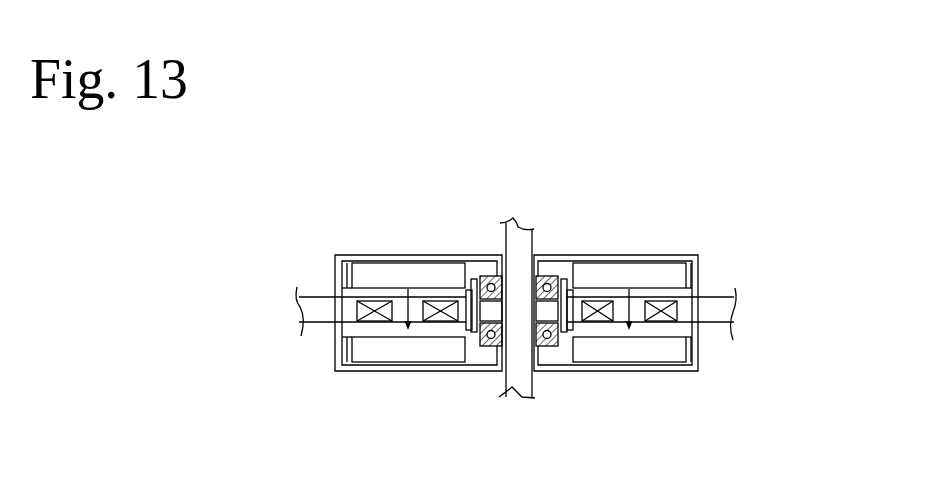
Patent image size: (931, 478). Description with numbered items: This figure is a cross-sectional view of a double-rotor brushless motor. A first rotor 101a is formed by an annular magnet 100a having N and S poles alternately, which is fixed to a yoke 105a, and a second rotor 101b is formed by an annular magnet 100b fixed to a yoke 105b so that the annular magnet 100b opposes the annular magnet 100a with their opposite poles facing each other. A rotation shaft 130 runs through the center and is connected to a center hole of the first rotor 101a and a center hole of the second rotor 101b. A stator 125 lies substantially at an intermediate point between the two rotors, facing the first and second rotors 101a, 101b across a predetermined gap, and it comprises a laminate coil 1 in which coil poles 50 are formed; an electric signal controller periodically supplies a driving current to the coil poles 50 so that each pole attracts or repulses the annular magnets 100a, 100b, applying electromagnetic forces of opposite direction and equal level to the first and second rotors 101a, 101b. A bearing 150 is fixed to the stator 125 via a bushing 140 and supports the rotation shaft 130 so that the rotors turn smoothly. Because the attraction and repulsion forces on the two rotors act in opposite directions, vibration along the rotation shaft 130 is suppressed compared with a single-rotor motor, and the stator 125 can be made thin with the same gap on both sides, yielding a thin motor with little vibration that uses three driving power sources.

The laminate coil 1 is at (700, 296).
The coil poles 50 is at (638, 308).
The annular magnet 100a is at (651, 274).
The annular magnet 100b is at (605, 352).
The first rotor 101a is at (593, 255).
The second rotor 101b is at (583, 371).
The yoke 105a is at (405, 254).
The yoke 105b is at (413, 372).
The stator 125 is at (322, 313).
The rotation shaft 130 is at (503, 222).
The bushing 140 is at (477, 347).
The bearing 150 is at (476, 276).